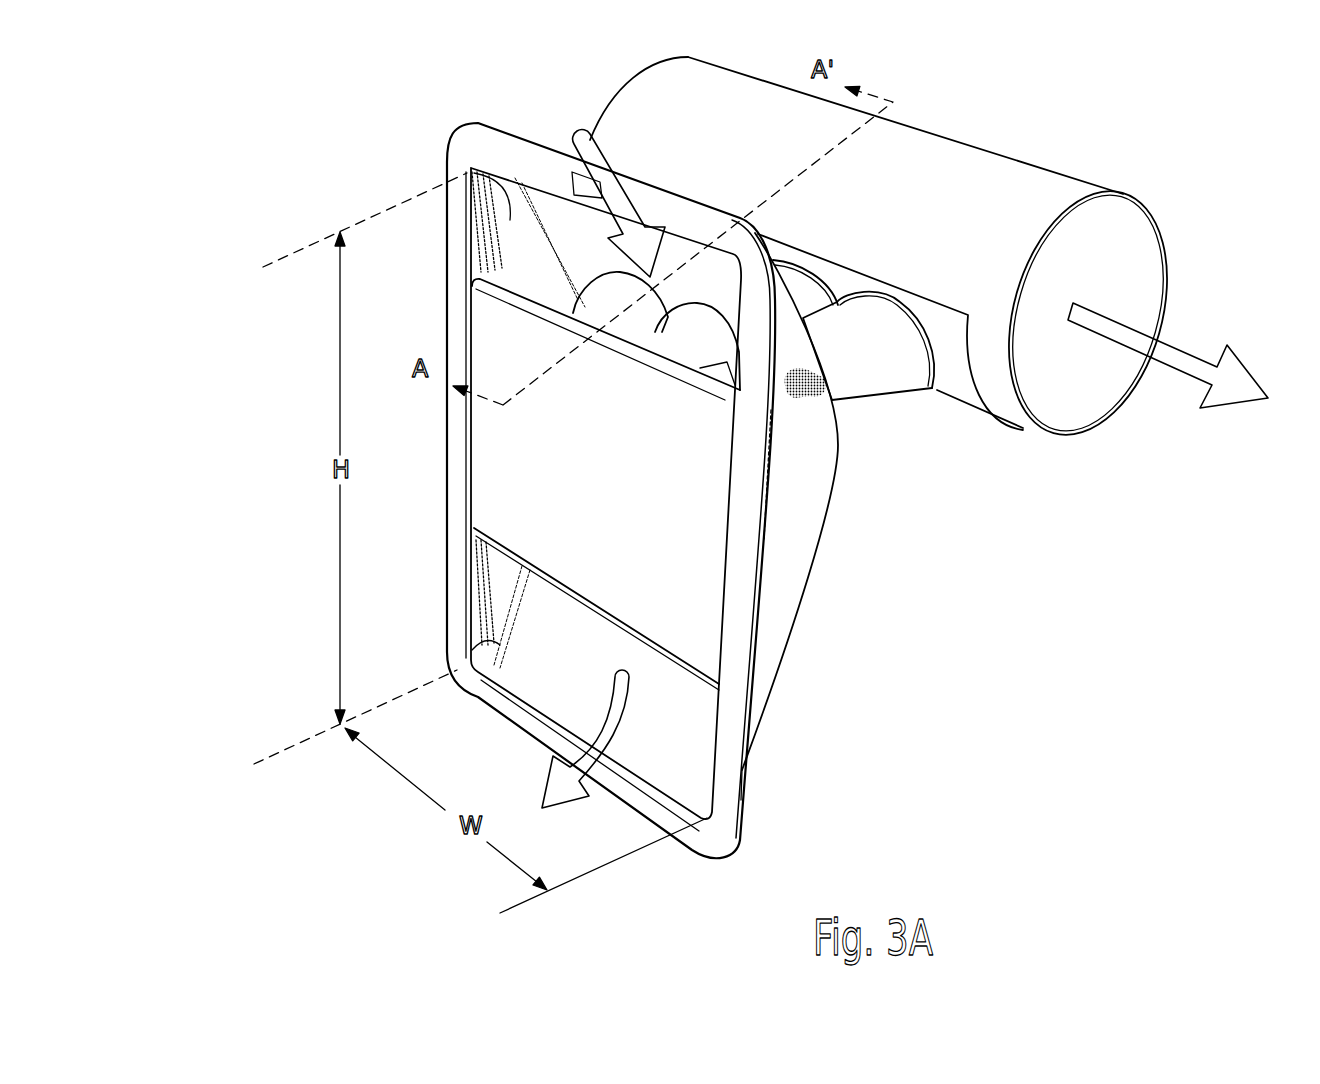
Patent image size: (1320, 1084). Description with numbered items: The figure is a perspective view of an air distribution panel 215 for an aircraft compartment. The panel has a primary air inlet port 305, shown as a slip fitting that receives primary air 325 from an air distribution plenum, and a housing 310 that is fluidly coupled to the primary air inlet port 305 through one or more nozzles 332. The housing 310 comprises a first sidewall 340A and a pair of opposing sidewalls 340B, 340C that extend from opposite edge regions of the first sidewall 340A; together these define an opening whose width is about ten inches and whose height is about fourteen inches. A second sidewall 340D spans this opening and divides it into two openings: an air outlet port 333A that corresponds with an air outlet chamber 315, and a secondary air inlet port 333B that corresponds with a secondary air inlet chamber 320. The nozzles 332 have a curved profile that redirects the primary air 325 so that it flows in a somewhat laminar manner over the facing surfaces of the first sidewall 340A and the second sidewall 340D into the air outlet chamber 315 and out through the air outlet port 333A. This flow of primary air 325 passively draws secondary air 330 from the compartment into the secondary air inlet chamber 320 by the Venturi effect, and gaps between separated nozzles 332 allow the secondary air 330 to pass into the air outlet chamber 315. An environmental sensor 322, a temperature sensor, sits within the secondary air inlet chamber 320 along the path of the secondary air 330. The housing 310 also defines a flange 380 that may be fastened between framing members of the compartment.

The air distribution panel 215 is at (212, 82).
The primary air inlet port 305 is at (1047, 167).
The housing 310 is at (470, 124).
The air outlet chamber 315 is at (565, 638).
The secondary air inlet chamber 320 is at (512, 258).
The environmental sensor 322 is at (805, 403).
The primary air 325 is at (1163, 332).
The secondary air 330 is at (607, 157).
The nozzle 332 is at (683, 337).
The air outlet port 333A is at (450, 608).
The secondary air inlet port 333B is at (450, 249).
The first sidewall 340A is at (568, 693).
The opposing sidewall 340B is at (467, 172).
The opposing sidewall 340C is at (803, 497).
The second sidewall 340D is at (500, 445).
The flange 380 is at (727, 727).